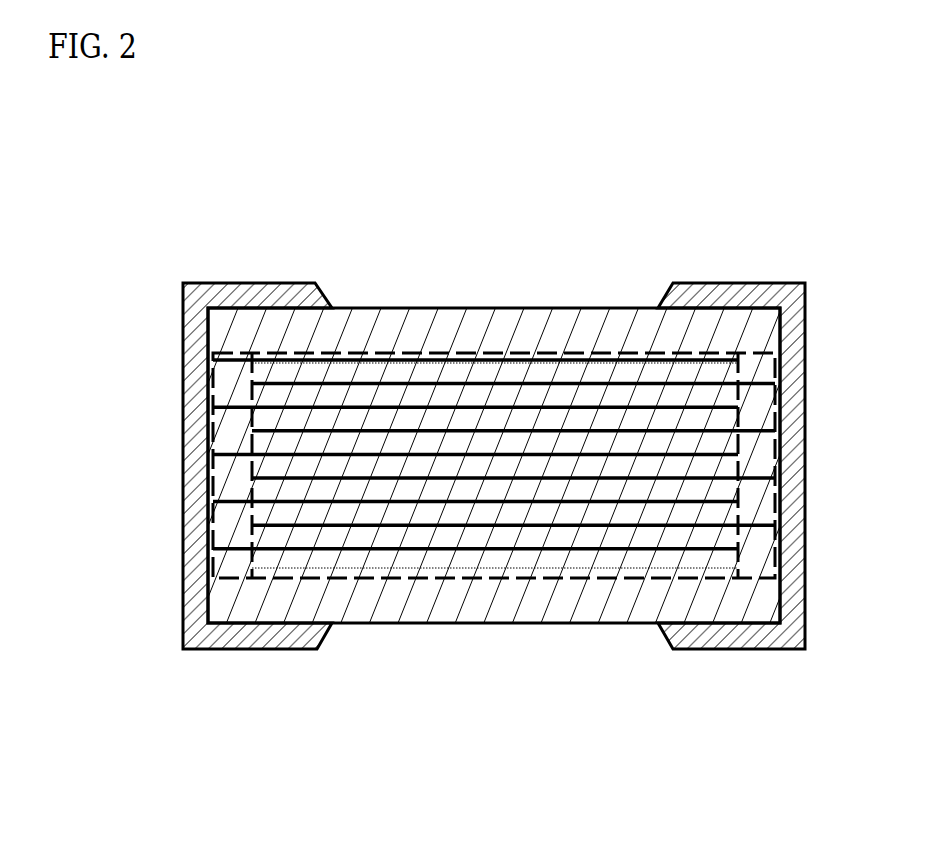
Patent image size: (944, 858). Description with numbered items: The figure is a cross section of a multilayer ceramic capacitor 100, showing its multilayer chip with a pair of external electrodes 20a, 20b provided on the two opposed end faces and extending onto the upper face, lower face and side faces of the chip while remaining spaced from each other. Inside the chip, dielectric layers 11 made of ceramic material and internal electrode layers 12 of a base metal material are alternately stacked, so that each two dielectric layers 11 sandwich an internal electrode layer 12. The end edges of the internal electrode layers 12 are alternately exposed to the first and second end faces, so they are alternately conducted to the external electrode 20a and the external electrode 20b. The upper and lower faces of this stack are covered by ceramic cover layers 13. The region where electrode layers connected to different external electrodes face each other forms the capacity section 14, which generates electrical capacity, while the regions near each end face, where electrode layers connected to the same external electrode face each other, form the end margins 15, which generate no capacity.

The multilayer ceramic capacitor 100 is at (708, 228).
The dielectric layer 11 is at (613, 533).
The internal electrode layer 12 is at (477, 502).
The cover layer 13 is at (393, 323).
The capacity section 14 is at (517, 353).
The end margin 15 is at (232, 352).
The external electrode 20a is at (207, 283).
The external electrode 20b is at (772, 282).